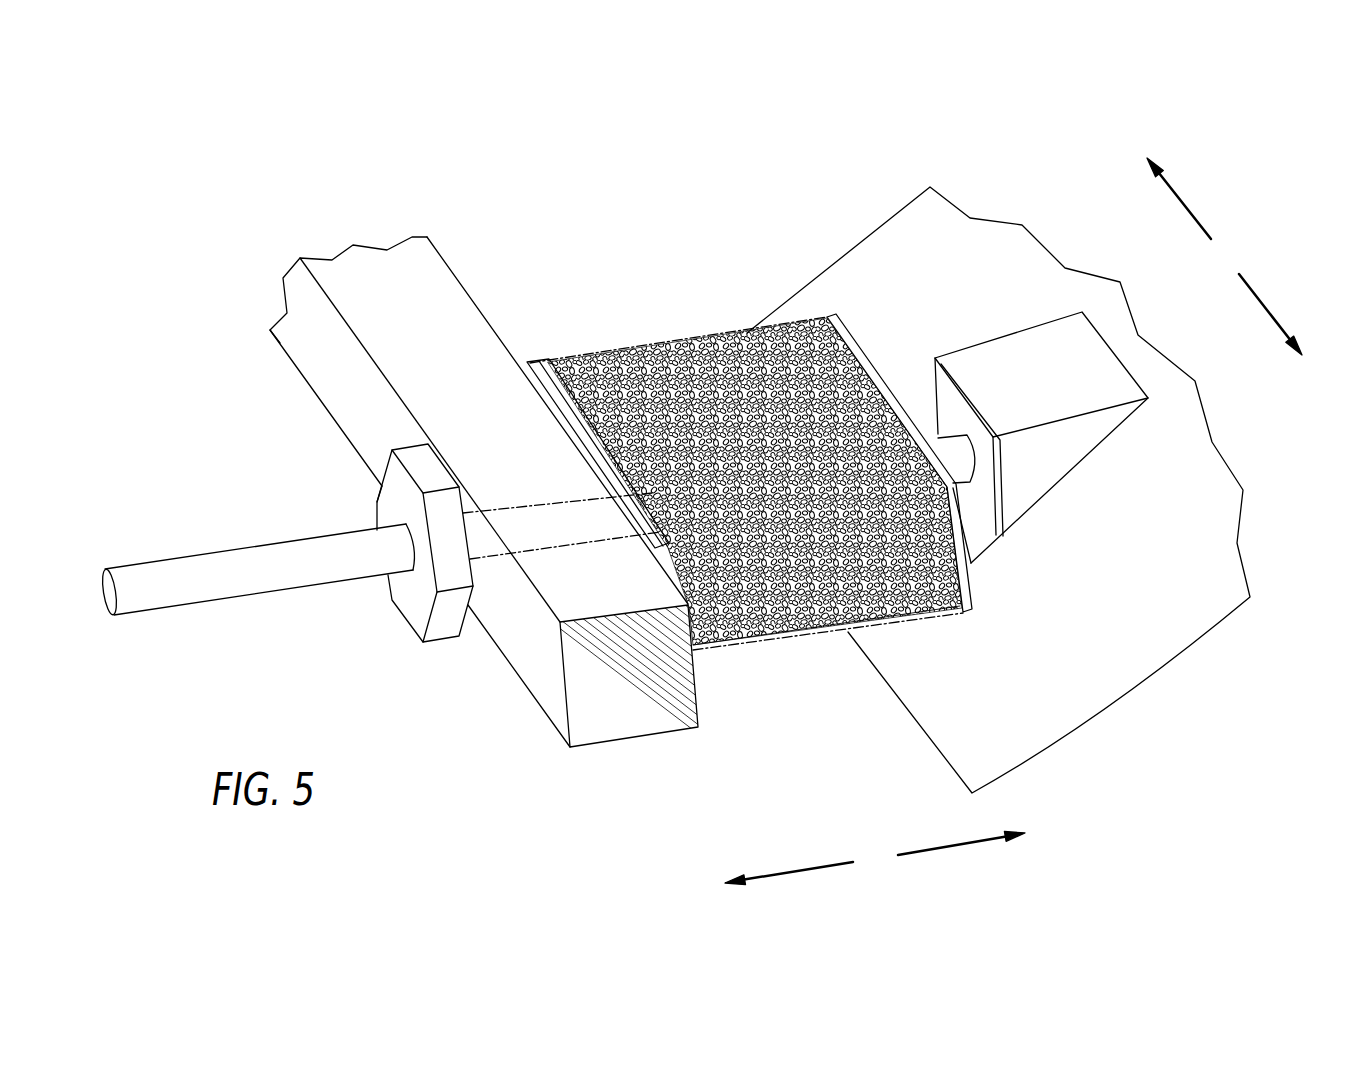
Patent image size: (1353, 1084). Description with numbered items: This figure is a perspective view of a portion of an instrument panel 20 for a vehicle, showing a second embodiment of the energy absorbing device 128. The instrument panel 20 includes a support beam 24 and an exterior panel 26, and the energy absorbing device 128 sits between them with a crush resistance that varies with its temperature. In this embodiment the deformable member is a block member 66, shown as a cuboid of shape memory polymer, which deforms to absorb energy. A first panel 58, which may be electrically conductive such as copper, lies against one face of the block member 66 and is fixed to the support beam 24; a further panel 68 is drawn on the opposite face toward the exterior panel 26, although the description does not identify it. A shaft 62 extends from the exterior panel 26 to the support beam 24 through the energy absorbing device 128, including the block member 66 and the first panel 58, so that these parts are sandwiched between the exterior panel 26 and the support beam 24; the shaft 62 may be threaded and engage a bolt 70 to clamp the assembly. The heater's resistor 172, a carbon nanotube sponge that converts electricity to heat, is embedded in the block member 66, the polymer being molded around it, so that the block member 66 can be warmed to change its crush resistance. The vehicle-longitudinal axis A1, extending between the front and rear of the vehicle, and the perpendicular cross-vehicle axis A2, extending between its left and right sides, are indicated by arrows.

The instrument panel 20 is at (973, 152).
The support beam 24 is at (420, 296).
The exterior panel 26 is at (898, 242).
The first panel 58 is at (528, 362).
The shaft 62 is at (218, 568).
The block member 66 is at (662, 352).
The second side plate 68 is at (835, 317).
The bolt 70 is at (400, 610).
The energy absorbing device 128 is at (767, 643).
The resistor 172 is at (823, 633).
The vehicle-longitudinal axis A1 is at (875, 858).
The cross-vehicle axis A2 is at (1224, 256).